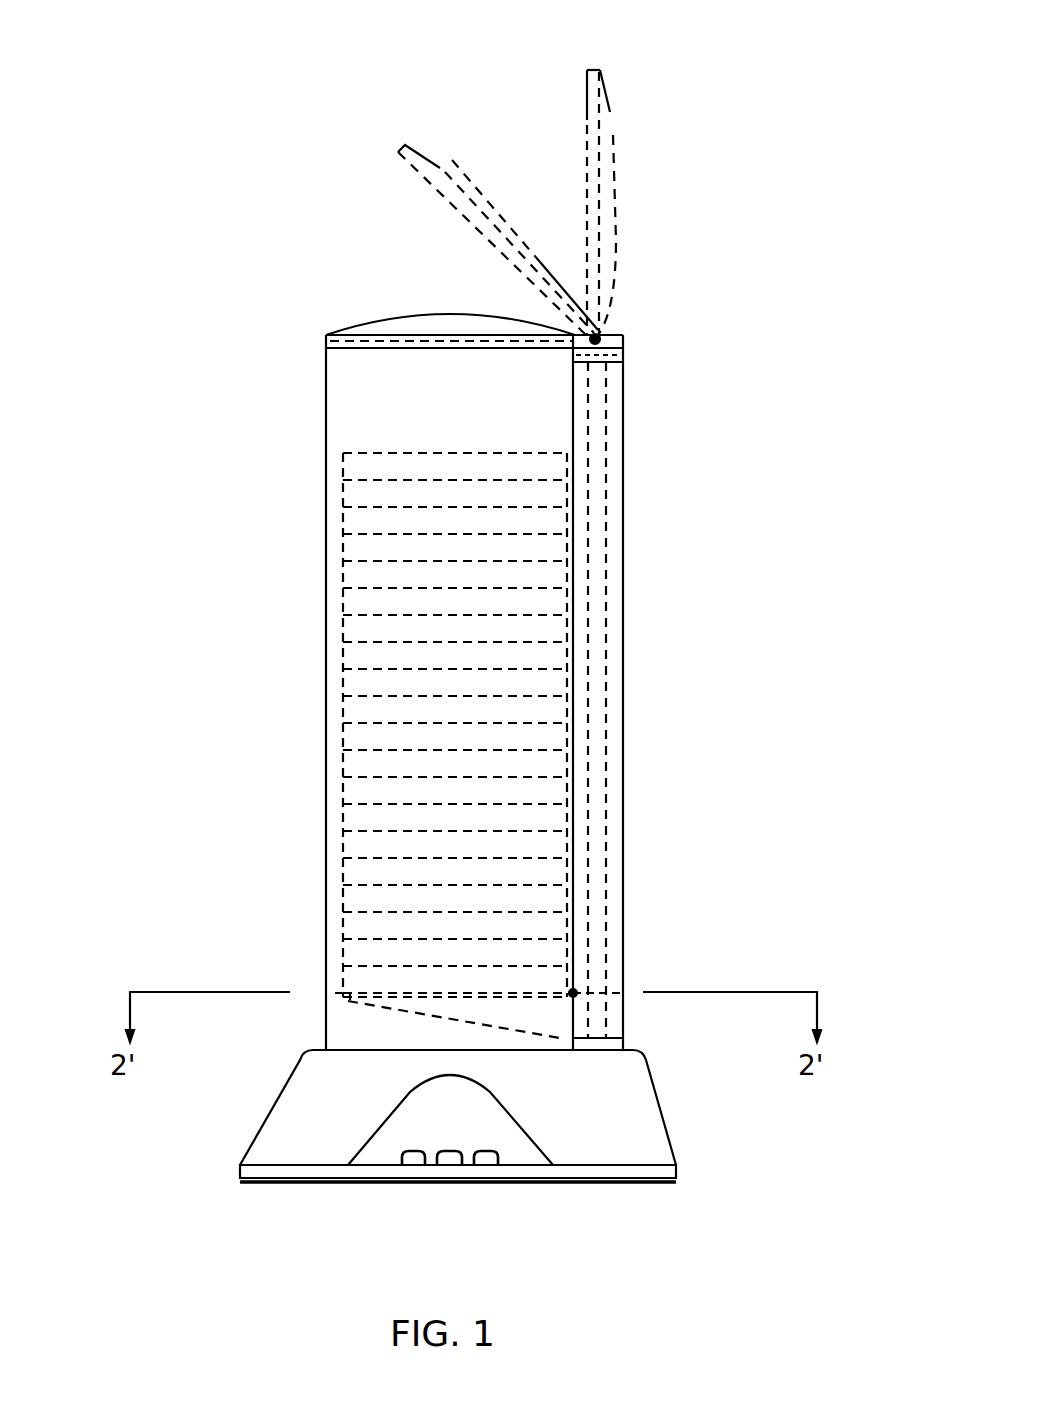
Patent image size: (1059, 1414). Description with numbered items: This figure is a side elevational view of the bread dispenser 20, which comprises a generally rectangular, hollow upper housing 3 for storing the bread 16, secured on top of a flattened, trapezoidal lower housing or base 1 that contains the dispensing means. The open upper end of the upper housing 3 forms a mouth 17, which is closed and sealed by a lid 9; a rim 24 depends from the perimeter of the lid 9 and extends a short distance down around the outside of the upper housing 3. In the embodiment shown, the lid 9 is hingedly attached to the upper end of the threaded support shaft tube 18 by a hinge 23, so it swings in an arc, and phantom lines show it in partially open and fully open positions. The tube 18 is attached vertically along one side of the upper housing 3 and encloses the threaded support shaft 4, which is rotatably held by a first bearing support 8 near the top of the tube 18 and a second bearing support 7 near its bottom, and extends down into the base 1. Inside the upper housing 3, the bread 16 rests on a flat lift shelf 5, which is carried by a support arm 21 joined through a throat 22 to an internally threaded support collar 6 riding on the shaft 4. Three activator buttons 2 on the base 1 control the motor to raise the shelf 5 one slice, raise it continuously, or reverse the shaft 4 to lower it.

The lower housing or base 1 is at (305, 1117).
The activator button 2 is at (490, 1164).
The upper housing 3 is at (325, 412).
The threaded support shaft 4 is at (597, 832).
The lift shelf 5 is at (380, 990).
The internally threaded support collar 6 is at (610, 1018).
The second bearing support 7 is at (620, 1040).
The first bearing support 8 is at (624, 357).
The lid 9 is at (612, 135).
The bread 16 is at (362, 686).
The mouth 17 is at (443, 262).
The threaded support shaft tube 18 is at (623, 495).
The dispenser 20 is at (235, 252).
The support arm 21 is at (450, 1007).
The throat 22 is at (575, 990).
The hinge 23 is at (600, 333).
The rim 24 is at (592, 70).